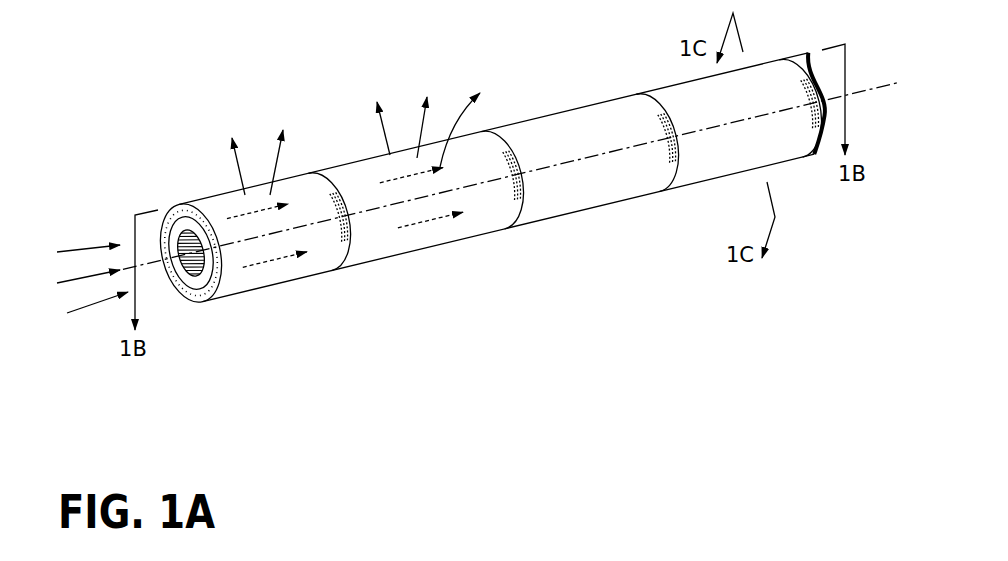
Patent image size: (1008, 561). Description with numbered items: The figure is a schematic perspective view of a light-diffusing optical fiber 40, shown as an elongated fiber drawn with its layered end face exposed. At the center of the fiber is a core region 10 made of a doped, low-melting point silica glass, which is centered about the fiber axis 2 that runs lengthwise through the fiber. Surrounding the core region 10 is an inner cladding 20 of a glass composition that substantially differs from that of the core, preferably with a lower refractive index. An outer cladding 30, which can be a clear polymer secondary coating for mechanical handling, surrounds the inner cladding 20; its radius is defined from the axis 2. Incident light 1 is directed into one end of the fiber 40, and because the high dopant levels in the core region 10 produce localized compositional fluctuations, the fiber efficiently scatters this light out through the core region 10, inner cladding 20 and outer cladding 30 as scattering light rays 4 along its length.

The incident light 1 is at (91, 306).
The axis 2 is at (875, 82).
The scattering light rays 4 is at (282, 145).
The core region 10 is at (182, 282).
The inner cladding 20 is at (183, 229).
The outer cladding 30 is at (220, 207).
The light-diffusing optical fiber 40 is at (325, 100).